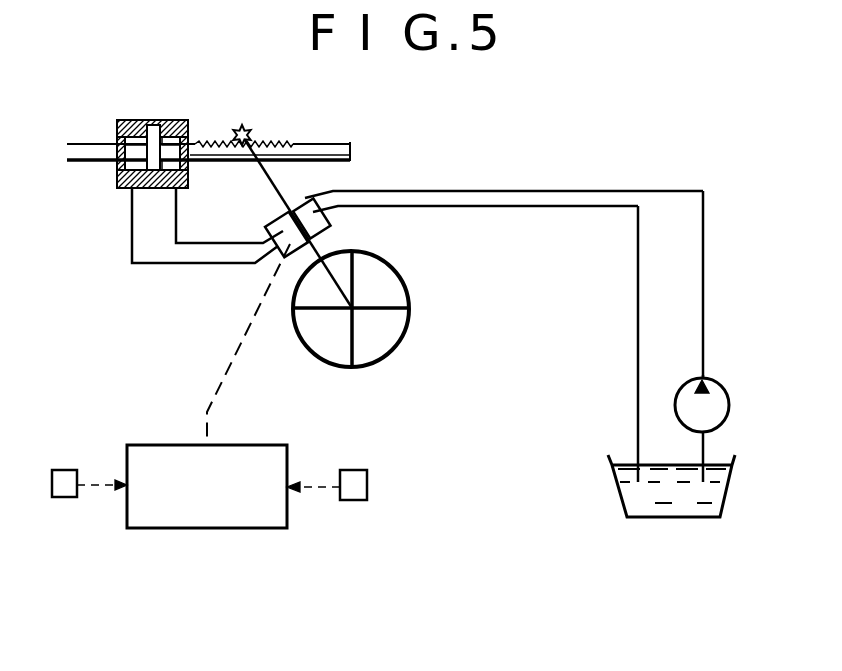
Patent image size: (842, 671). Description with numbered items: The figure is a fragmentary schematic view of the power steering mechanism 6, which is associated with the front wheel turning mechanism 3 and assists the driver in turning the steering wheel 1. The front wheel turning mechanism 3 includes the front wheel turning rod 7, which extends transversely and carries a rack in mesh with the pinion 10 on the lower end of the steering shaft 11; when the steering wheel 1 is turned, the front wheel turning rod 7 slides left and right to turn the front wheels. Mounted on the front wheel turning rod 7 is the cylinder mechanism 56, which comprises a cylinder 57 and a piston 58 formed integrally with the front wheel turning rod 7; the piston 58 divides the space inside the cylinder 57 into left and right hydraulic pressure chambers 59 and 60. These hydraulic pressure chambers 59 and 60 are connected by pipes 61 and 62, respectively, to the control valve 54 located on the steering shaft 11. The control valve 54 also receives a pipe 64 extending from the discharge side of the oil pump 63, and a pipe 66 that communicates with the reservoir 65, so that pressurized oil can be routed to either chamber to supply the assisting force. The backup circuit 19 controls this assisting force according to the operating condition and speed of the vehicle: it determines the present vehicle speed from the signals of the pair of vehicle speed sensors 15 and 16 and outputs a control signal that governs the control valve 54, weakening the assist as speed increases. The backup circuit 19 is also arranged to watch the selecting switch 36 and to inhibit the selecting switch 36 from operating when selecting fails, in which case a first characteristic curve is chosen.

The steering wheel 1 is at (408, 297).
The front wheel turning mechanism 3 is at (285, 322).
The power steering mechanism 6 is at (470, 163).
The front wheel turning rod 7 is at (80, 143).
The pinion 10 is at (250, 129).
The steering shaft 11 is at (324, 242).
The vehicle speed sensor 15 is at (87, 450).
The vehicle speed sensor 16 is at (65, 470).
The backup circuit 19 is at (243, 528).
The selecting switch 36 is at (352, 470).
The control valve 54 is at (332, 190).
The cylinder mechanism 56 is at (148, 111).
The cylinder 57 is at (124, 176).
The piston 58 is at (186, 176).
The hydraulic pressure chamber 59 is at (126, 140).
The hydraulic pressure chamber 60 is at (174, 138).
The pipe 61 is at (215, 244).
The pipe 62 is at (143, 264).
The oil pump 63 is at (729, 395).
The pipe 64 is at (704, 322).
The reservoir 65 is at (615, 482).
The pipe 66 is at (637, 314).